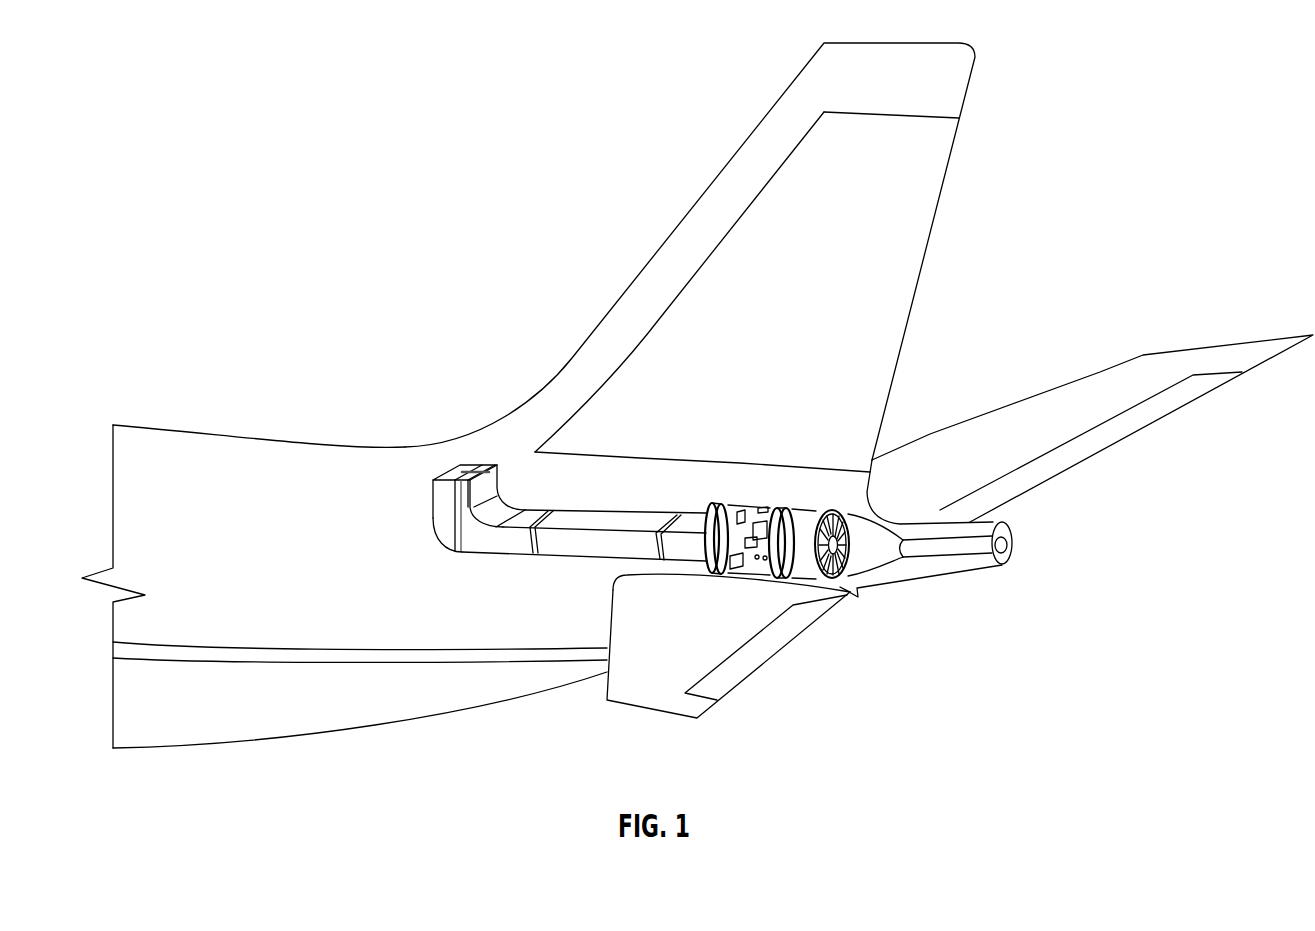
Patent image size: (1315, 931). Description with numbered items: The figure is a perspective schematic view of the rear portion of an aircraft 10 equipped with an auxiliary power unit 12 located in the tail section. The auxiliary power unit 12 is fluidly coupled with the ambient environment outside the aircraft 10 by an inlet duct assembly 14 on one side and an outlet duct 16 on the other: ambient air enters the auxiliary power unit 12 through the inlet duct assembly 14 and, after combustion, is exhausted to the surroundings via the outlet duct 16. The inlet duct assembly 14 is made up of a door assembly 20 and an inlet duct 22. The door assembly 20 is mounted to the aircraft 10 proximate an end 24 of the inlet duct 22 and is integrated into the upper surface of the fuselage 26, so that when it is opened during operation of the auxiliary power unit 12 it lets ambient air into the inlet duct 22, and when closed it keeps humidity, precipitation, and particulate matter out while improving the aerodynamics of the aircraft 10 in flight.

The aircraft 10 is at (260, 430).
The auxiliary power unit 12 is at (777, 507).
The inlet duct assembly 14 is at (571, 509).
The outlet duct 16 is at (945, 537).
The door assembly 20 is at (457, 467).
The inlet duct 22 is at (452, 542).
The end 24 is at (450, 493).
The fuselage 26 is at (298, 440).